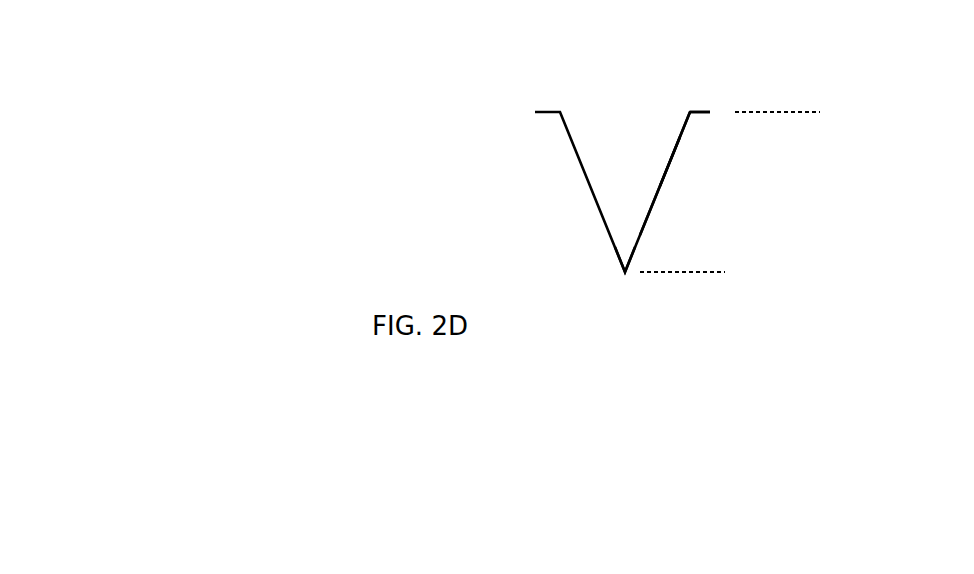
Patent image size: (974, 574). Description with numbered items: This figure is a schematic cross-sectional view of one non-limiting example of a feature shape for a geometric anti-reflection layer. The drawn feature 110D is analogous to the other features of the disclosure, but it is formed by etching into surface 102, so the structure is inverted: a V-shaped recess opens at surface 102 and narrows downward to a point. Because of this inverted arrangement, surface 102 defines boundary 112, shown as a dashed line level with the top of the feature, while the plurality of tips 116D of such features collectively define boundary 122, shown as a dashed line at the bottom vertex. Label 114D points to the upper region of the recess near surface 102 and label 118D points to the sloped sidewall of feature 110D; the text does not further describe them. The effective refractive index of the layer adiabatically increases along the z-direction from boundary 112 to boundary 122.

The feature 110D is at (488, 90).
The upper portion of sidewall 114D is at (656, 108).
The tips 116D is at (616, 265).
The sidewall 118D is at (678, 168).
The surface 102 is at (700, 112).
The boundary 112 is at (755, 113).
The boundary 122 is at (662, 273).